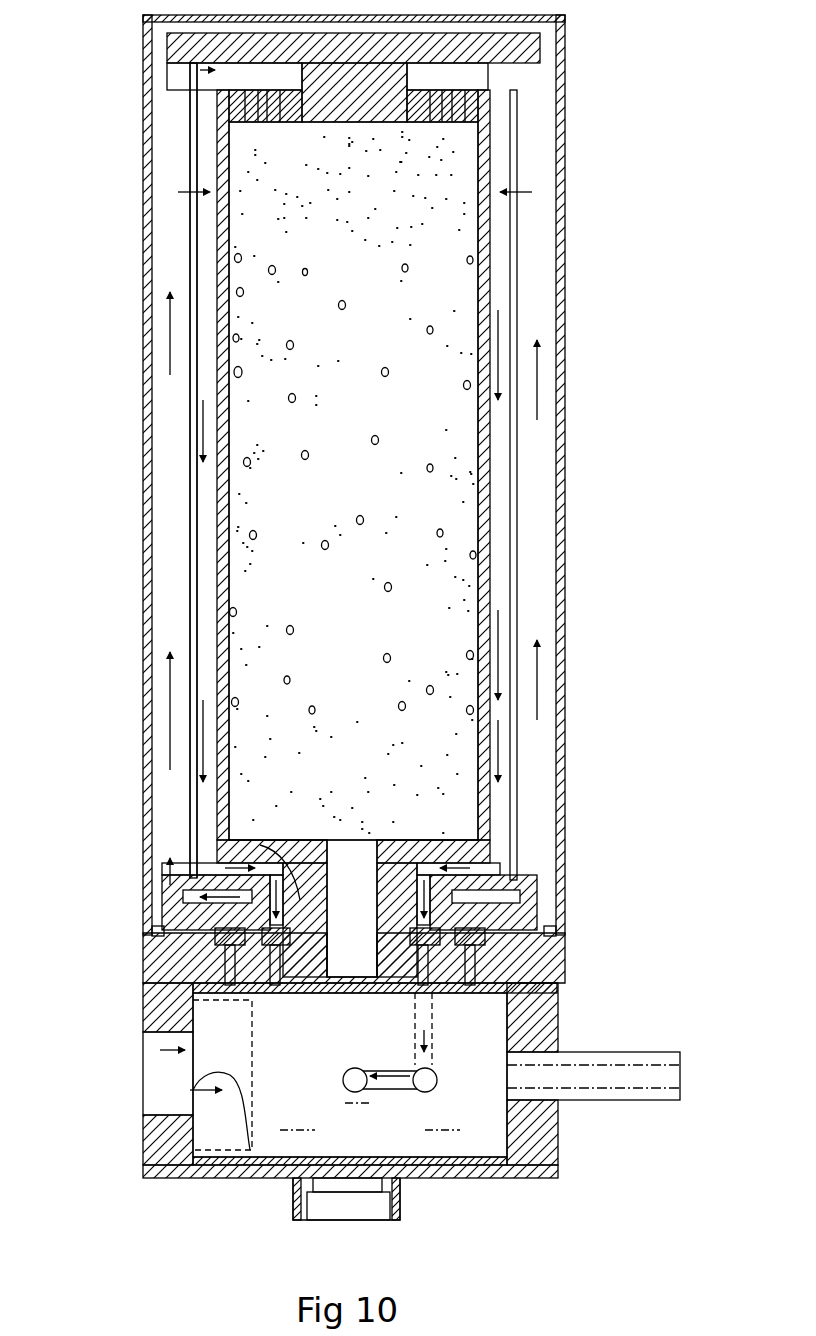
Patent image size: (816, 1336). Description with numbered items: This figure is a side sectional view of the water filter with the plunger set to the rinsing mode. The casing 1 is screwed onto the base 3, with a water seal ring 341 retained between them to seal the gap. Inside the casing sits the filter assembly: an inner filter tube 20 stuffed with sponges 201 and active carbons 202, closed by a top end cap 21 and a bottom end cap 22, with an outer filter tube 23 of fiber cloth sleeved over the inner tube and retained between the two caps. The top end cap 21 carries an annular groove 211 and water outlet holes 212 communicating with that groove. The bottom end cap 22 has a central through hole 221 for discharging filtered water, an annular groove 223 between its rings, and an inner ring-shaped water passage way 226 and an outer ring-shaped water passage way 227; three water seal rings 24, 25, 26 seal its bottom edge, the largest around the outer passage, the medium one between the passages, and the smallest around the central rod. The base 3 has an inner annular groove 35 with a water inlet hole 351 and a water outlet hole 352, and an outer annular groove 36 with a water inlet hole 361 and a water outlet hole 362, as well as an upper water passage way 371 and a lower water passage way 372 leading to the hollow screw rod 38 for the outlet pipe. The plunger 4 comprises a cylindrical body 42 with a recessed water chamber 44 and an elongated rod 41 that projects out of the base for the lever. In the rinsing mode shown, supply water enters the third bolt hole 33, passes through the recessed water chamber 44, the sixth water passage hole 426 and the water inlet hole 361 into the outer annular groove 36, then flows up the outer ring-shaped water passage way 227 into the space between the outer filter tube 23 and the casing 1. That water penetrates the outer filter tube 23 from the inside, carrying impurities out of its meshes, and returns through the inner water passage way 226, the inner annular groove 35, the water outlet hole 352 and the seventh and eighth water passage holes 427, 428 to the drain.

The casing 1 is at (143, 368).
The inner filter tube 20 is at (215, 225).
The sponge 201 is at (240, 145).
The active carbons 202 is at (243, 460).
The top end cap 21 is at (167, 42).
The annular groove 211 is at (208, 70).
The water outlet holes 212 is at (252, 92).
The bottom end cap 22 is at (490, 875).
The through hole 221 is at (400, 830).
The annular groove 223 is at (520, 885).
The inner ring-shaped water passage way 226 is at (290, 870).
The outer ring-shaped water passage way 227 is at (290, 862).
The outer filter tube 23 is at (190, 277).
The water seal ring 24 is at (540, 908).
The water seal ring 25 is at (520, 897).
The water seal ring 26 is at (517, 835).
The base 3 is at (143, 1145).
The third bolt hole 33 is at (158, 1105).
The water seal ring 341 is at (555, 927).
The inner annular groove 35 is at (215, 900).
The water inlet hole 351 is at (268, 860).
The water outlet hole 352 is at (540, 963).
The outer annular groove 36 is at (250, 890).
The water inlet hole 361 is at (200, 918).
The water outlet hole 362 is at (500, 945).
The upper water passage way 371 is at (360, 990).
The lower water passage way 372 is at (350, 1180).
The hollow screw rod 38 is at (293, 1198).
The plunger 4 is at (512, 1110).
The elongated rod 41 is at (660, 1100).
The cylindrical body 42 is at (507, 1140).
The sixth water passage hole 426 is at (225, 1003).
The seventh water passage hole 427 is at (480, 1005).
The eighth water passage hole 428 is at (342, 1085).
The recessed water chamber 44 is at (193, 1090).